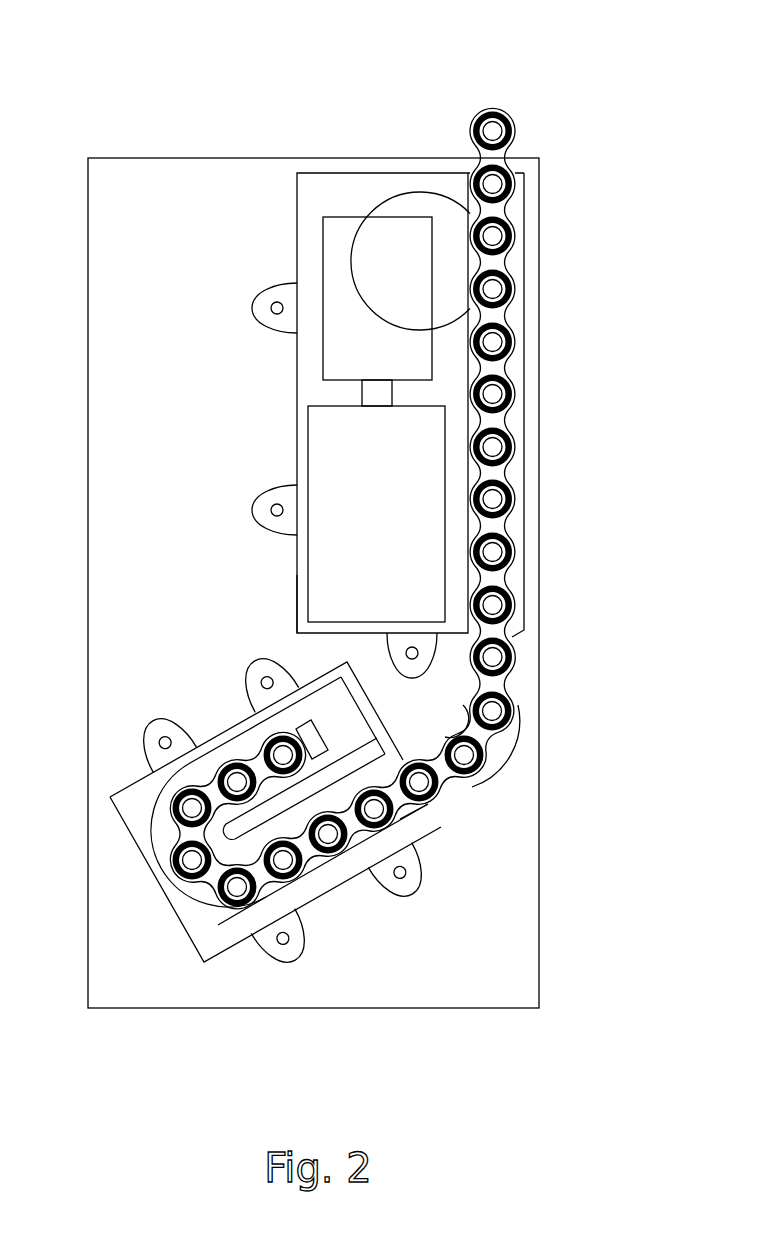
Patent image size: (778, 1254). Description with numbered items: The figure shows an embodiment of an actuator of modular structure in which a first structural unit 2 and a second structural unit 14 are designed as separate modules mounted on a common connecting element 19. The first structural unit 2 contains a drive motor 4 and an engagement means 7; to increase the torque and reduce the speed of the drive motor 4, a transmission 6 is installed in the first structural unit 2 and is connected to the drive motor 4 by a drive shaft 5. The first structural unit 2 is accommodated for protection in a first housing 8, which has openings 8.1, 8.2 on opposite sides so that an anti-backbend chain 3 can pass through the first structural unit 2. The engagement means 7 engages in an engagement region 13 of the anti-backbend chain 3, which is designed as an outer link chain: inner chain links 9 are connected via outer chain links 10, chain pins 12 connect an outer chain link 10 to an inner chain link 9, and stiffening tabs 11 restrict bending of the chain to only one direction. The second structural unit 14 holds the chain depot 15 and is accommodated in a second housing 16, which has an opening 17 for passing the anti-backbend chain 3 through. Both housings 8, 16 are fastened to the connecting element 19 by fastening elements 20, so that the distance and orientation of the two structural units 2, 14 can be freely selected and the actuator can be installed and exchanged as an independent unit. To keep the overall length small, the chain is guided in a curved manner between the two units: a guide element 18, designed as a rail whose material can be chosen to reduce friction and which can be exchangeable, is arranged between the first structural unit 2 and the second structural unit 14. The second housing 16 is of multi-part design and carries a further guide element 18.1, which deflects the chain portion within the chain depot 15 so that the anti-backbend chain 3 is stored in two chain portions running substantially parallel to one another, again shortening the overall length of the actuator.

The first structural unit 2 is at (280, 225).
The anti-backbend chain 3 is at (403, 496).
The drive motor 4 is at (376, 514).
The drive shaft 5 is at (377, 393).
The transmission 6 is at (377, 298).
The engagement means 7 is at (410, 261).
The first housing 8 is at (405, 399).
The opening 8.1 is at (517, 170).
The opening 8.2 is at (510, 633).
The inner chain link 9 is at (493, 318).
The outer chain link 10 is at (493, 370).
The stiffening tab 11 is at (513, 397).
The chain pin 12 is at (513, 453).
The engagement region 13 is at (493, 263).
The second structural unit 14 is at (308, 823).
The chain depot 15 is at (330, 726).
The second housing 16 is at (153, 872).
The opening 17 is at (432, 795).
The guide element 18 is at (510, 757).
The further guide element 18.1 is at (232, 917).
The connecting element 19 is at (313, 583).
The fastening element 20 is at (265, 300).